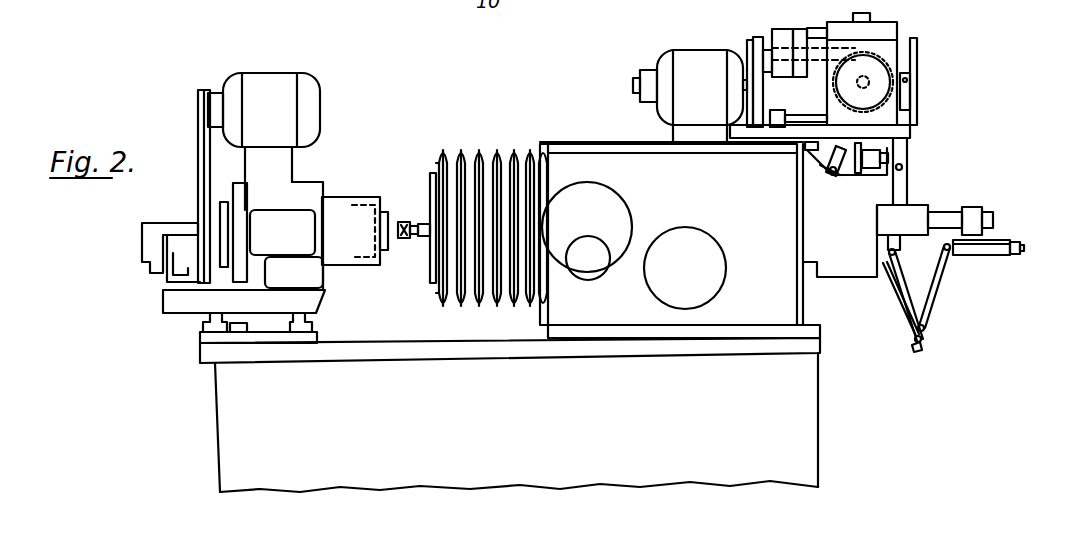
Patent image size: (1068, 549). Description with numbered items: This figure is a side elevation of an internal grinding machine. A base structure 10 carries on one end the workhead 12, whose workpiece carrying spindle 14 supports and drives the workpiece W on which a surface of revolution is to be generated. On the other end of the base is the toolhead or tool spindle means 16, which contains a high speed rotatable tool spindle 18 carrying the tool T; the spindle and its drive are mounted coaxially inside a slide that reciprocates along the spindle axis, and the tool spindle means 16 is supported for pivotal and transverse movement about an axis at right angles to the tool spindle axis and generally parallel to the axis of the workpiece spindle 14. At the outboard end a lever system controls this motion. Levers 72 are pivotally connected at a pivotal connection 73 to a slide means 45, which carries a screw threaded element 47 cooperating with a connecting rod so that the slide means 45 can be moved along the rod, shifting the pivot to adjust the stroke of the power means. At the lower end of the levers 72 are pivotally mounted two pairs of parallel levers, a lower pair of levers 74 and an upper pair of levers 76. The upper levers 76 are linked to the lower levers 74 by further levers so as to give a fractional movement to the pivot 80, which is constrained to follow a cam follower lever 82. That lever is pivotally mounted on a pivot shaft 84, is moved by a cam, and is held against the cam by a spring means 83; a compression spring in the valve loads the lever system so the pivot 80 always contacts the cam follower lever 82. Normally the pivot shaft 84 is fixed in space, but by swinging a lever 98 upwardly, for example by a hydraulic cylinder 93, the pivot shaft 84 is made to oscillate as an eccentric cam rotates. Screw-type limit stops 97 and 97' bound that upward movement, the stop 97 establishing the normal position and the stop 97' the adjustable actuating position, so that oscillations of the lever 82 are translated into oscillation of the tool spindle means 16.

The base structure 10 is at (818, 428).
The workhead 12 is at (312, 183).
The workpiece carrying spindle 14 is at (356, 197).
The workpiece W is at (386, 209).
The tool T is at (405, 220).
The tool spindle 18 is at (424, 240).
The tool spindle means 16 is at (604, 144).
The cam follower lever 82 is at (909, 110).
The spring means 83 is at (905, 126).
The pivot shaft 84 is at (903, 167).
The limit stop 97' is at (810, 119).
The limit stop 97 is at (843, 142).
The lever 98 is at (845, 178).
The hydraulic cylinder 93 is at (871, 171).
The pivot 80 is at (897, 255).
The slide means 45 is at (975, 256).
The screw threaded element 47 is at (1016, 242).
The pivotal connection 73 is at (948, 264).
The levers 72 is at (938, 290).
The upper pair of levers 76 is at (905, 312).
The lower pair of levers 74 is at (892, 290).